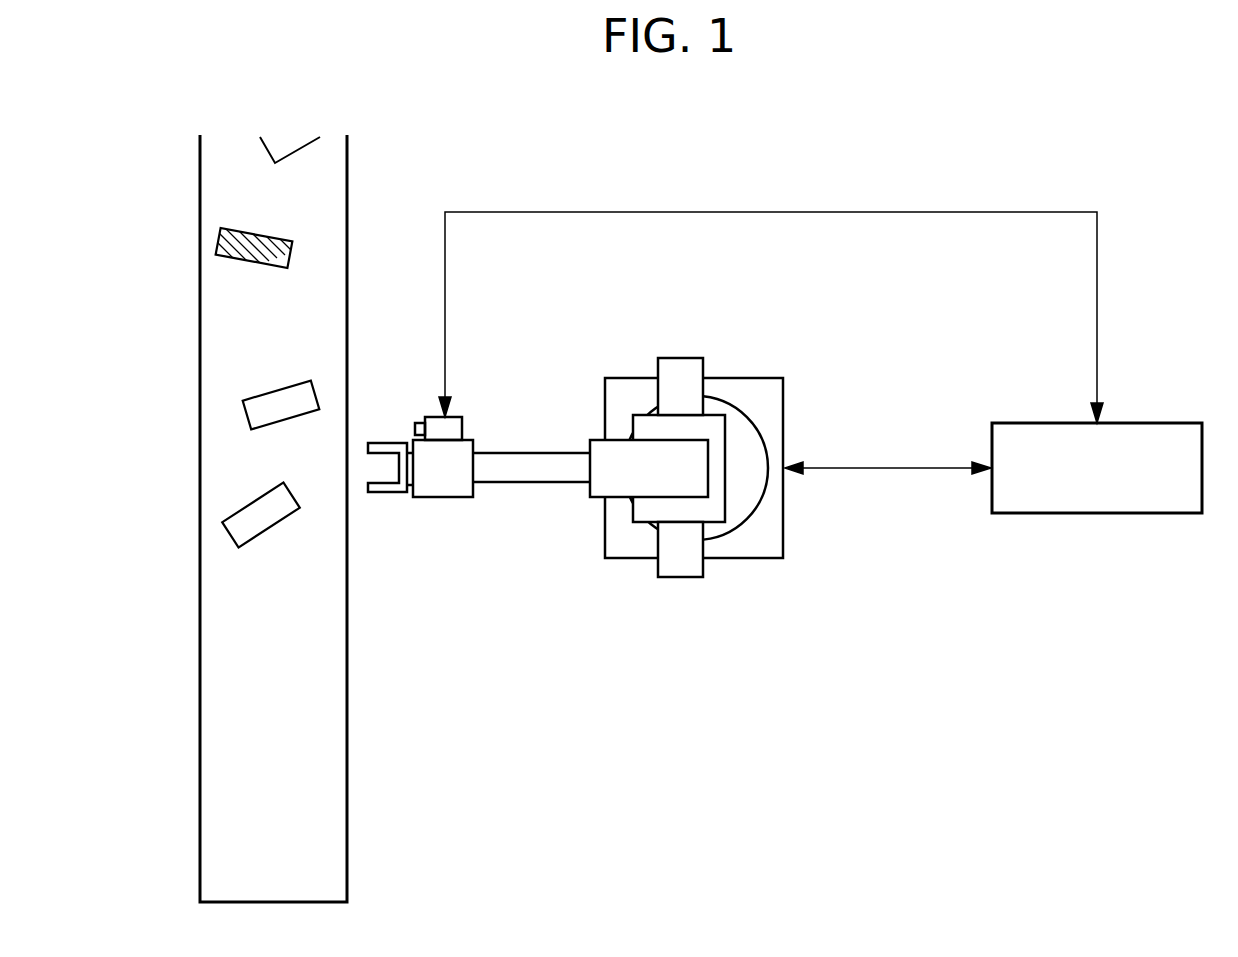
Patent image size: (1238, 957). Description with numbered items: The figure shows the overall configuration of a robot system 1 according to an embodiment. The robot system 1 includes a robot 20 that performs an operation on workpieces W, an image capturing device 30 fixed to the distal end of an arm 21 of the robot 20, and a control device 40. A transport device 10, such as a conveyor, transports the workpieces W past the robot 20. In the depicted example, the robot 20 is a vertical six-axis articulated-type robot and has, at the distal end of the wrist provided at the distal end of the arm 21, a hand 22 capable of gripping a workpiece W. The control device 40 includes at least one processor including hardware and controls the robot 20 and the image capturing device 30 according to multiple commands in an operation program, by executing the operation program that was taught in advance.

The robot system 1 is at (1138, 142).
The transport device 10 is at (200, 188).
The workpiece W is at (218, 243).
The robot 20 is at (743, 558).
The arm 21 is at (505, 483).
The hand 22 is at (385, 492).
The image capturing device 30 is at (457, 412).
The control device 40 is at (1130, 513).